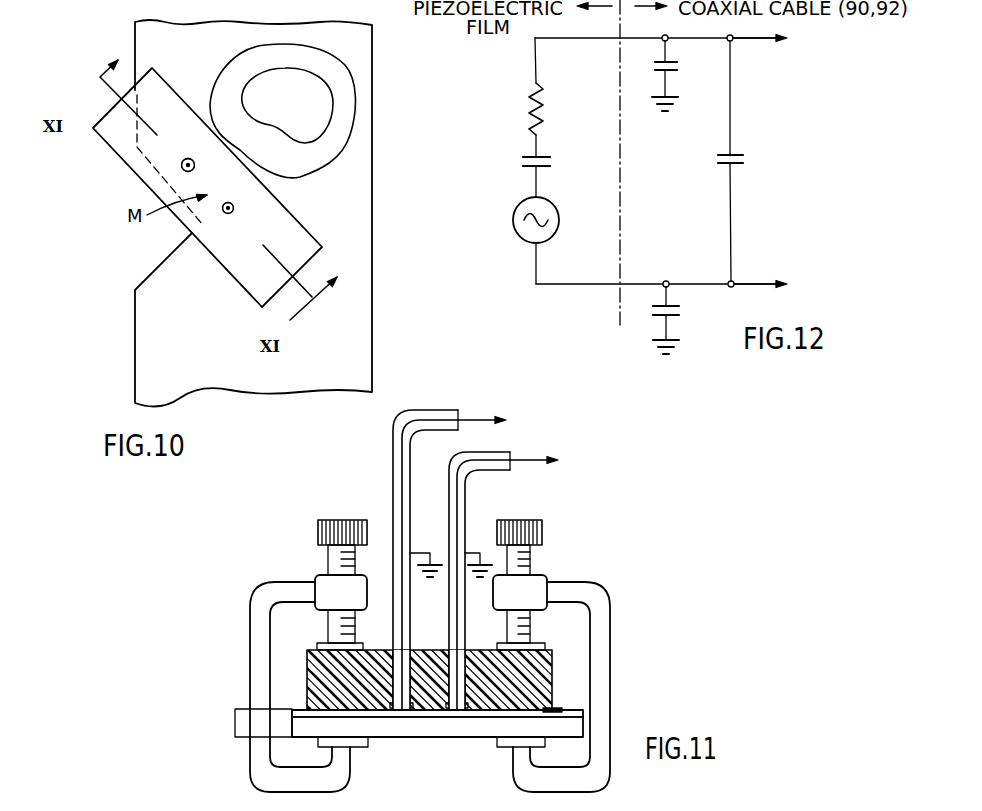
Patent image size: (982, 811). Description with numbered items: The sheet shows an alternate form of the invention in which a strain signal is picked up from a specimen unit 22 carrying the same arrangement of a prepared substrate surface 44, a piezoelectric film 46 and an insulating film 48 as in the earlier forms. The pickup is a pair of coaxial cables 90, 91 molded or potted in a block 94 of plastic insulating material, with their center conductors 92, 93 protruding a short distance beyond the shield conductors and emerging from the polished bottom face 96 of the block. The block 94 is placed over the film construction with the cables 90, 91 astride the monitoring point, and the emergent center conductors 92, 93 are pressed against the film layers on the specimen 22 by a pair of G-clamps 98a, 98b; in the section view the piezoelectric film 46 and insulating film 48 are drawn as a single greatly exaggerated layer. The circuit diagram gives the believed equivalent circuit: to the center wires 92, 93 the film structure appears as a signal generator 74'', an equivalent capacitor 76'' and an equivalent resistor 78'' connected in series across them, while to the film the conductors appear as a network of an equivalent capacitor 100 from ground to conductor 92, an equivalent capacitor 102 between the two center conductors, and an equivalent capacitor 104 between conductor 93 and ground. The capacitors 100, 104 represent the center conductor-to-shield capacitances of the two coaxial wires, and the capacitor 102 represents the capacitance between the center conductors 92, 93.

In FIG. 10, the specimen unit 22 is at (372, 208).
In FIG. 11, the specimen unit 22 is at (400, 730).
In FIG. 10, the prepared substrate surface 44 is at (307, 104).
In FIG. 10, the piezoelectric film 46 is at (258, 80).
In FIG. 10, the insulating film 48 is at (193, 73).
In FIG. 11, the insulating film 48 is at (235, 712).
In FIG. 10, the coaxial cable 90 is at (186, 159).
In FIG. 11, the coaxial cable 90 is at (430, 408).
In FIG. 10, the coaxial cable 91 is at (234, 206).
In FIG. 11, the coaxial cable 91 is at (488, 452).
In FIG. 10, the center conductor 92 is at (195, 165).
In FIG. 12, the center conductor 92 is at (758, 40).
In FIG. 11, the center conductor 92 is at (473, 415).
In FIG. 10, the center conductor 93 is at (231, 214).
In FIG. 12, the center conductor 93 is at (752, 284).
In FIG. 11, the center conductor 93 is at (530, 458).
In FIG. 10, the block 94 is at (300, 231).
In FIG. 11, the block 94 is at (317, 665).
In FIG. 11, the bottom face 96 is at (556, 711).
In FIG. 11, the G-clamp 98a is at (280, 586).
In FIG. 11, the G-clamp 98b is at (583, 590).
In FIG. 12, the equivalent capacitor 100 is at (672, 64).
In FIG. 12, the equivalent capacitor 102 is at (740, 157).
In FIG. 12, the equivalent capacitor 104 is at (675, 307).
In FIG. 12, the signal generator 74'' is at (514, 220).
In FIG. 12, the equivalent capacitor 76'' is at (517, 166).
In FIG. 12, the equivalent resistor 78'' is at (514, 109).